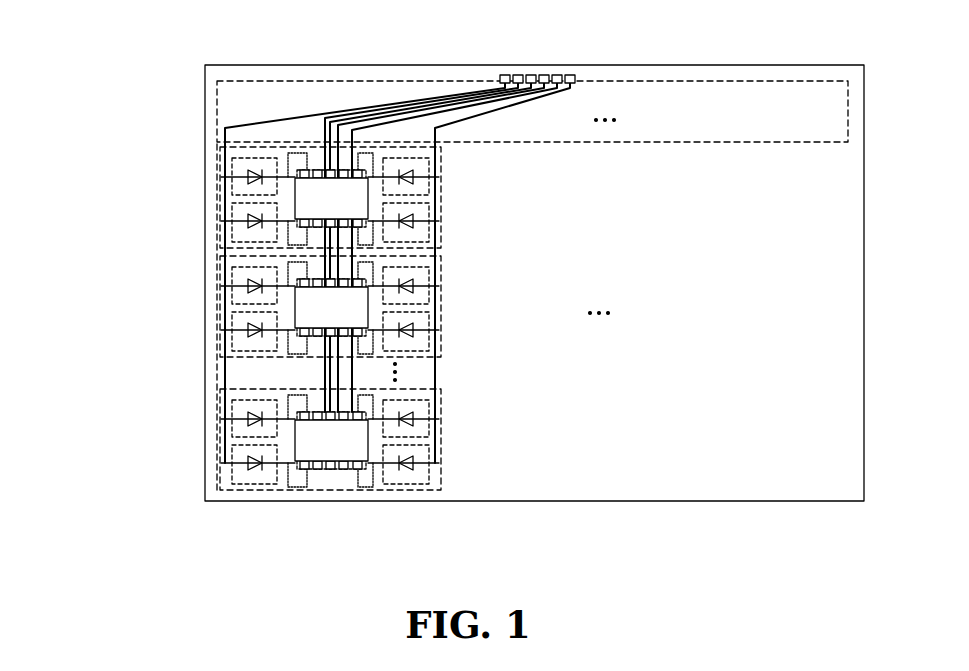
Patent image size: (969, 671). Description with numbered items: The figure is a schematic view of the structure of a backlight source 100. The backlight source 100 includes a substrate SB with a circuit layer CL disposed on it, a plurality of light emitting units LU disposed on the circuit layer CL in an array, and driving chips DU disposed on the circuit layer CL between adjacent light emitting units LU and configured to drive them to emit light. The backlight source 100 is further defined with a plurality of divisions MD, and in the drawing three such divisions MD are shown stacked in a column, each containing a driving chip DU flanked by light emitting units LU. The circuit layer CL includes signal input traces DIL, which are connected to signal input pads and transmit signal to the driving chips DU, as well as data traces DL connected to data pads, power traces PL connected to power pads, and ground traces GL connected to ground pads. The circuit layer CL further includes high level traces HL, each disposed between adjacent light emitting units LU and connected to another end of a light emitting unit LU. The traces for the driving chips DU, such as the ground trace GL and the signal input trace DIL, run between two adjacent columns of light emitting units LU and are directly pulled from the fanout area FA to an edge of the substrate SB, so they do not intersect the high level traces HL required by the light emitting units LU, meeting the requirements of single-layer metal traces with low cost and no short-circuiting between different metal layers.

The backlight source 100 is at (95, 75).
The substrate SB is at (808, 65).
The fanout area FA is at (668, 81).
The circuit layer CL is at (458, 42).
The high level trace HL is at (258, 116).
The power trace PL is at (337, 113).
The signal input trace DIL is at (360, 113).
The data trace DL is at (393, 114).
The ground trace GL is at (417, 114).
The driving chip DU is at (293, 309).
The light emitting unit LU is at (223, 238).
The division MD is at (218, 176).